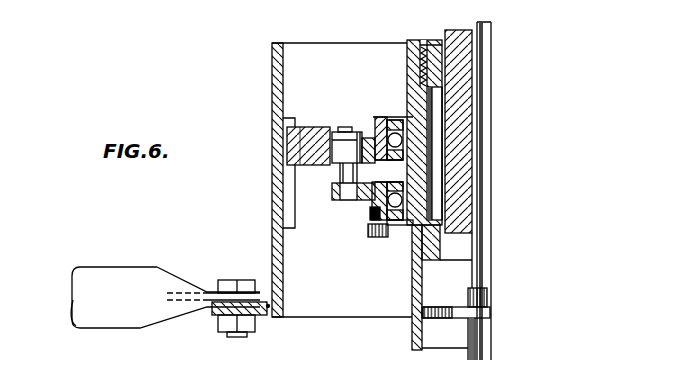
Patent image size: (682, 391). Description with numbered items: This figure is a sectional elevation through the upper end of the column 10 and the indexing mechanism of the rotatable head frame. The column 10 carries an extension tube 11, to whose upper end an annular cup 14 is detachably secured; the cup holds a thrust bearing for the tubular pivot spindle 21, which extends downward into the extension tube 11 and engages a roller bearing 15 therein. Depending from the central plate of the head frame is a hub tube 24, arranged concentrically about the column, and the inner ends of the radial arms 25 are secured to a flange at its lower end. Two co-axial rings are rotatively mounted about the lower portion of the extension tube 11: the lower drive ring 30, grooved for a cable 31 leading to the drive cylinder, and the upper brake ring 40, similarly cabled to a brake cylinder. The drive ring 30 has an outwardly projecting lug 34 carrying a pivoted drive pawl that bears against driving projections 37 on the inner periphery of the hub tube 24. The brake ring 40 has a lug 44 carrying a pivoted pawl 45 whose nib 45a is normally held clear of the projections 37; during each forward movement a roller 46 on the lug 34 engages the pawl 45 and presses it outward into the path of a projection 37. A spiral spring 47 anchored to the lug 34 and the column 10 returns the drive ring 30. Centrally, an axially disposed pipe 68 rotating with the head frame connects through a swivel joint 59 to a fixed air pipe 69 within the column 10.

The column 10 is at (412, 334).
The extension tube 11 is at (417, 40).
The annular cup 14 is at (427, 40).
The roller bearing 15 is at (437, 135).
The tubular pivot spindle 21 is at (462, 90).
The hub tube 24 is at (272, 86).
The radial arms 25 is at (122, 278).
The drive ring 30 is at (386, 238).
The cable 31 is at (372, 205).
The lug 34 is at (331, 195).
The driving projections 37 is at (290, 177).
The brake ring 40 is at (384, 117).
The lug 44 is at (367, 137).
The pawl 45 is at (307, 127).
The nib 45a is at (287, 143).
The roller 46 is at (339, 131).
The spiral spring 47 is at (372, 238).
The swivel joint 59 is at (487, 297).
The axially disposed pipe 68 is at (487, 58).
The fixed air pipe 69 is at (480, 338).